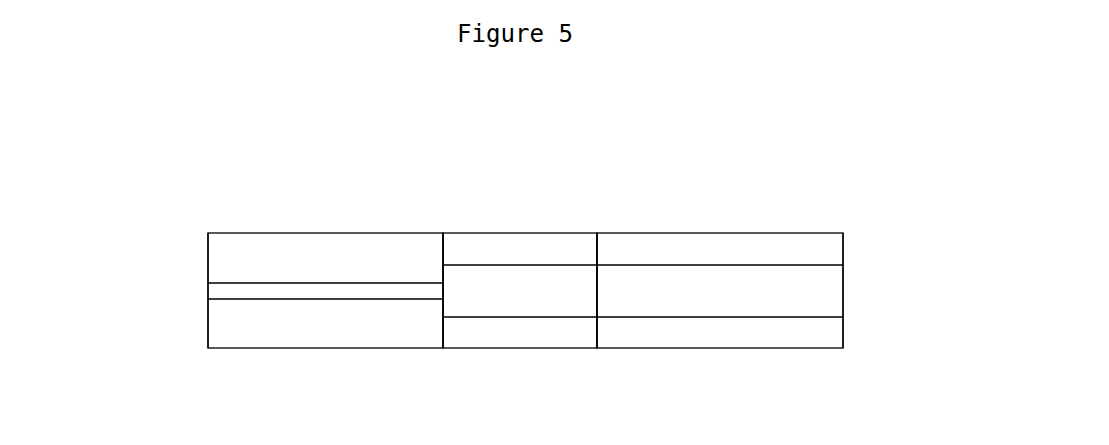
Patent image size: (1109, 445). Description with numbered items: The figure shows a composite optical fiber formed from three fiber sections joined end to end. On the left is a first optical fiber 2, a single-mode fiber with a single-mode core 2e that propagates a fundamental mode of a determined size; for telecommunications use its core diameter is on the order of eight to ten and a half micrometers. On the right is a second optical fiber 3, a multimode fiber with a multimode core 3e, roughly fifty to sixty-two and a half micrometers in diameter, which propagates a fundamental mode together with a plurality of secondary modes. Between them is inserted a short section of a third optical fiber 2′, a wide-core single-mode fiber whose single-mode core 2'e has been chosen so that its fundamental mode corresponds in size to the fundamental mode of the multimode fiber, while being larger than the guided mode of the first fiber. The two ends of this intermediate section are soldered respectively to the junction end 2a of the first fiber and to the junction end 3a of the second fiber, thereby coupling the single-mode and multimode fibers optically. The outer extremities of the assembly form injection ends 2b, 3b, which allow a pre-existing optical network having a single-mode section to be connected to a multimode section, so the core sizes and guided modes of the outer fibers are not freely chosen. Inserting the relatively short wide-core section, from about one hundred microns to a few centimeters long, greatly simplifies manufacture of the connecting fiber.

The first optical fiber 2 is at (325, 242).
The third optical fiber 2′ is at (528, 233).
The second optical fiber 3 is at (733, 233).
The junction end 3a is at (614, 233).
The single-mode core 2e is at (316, 315).
The junction end 2a is at (430, 321).
The single-mode core 2'e is at (520, 356).
The multimode core 3e is at (683, 292).
The injection end 2b is at (174, 315).
The injection end 3b is at (881, 313).